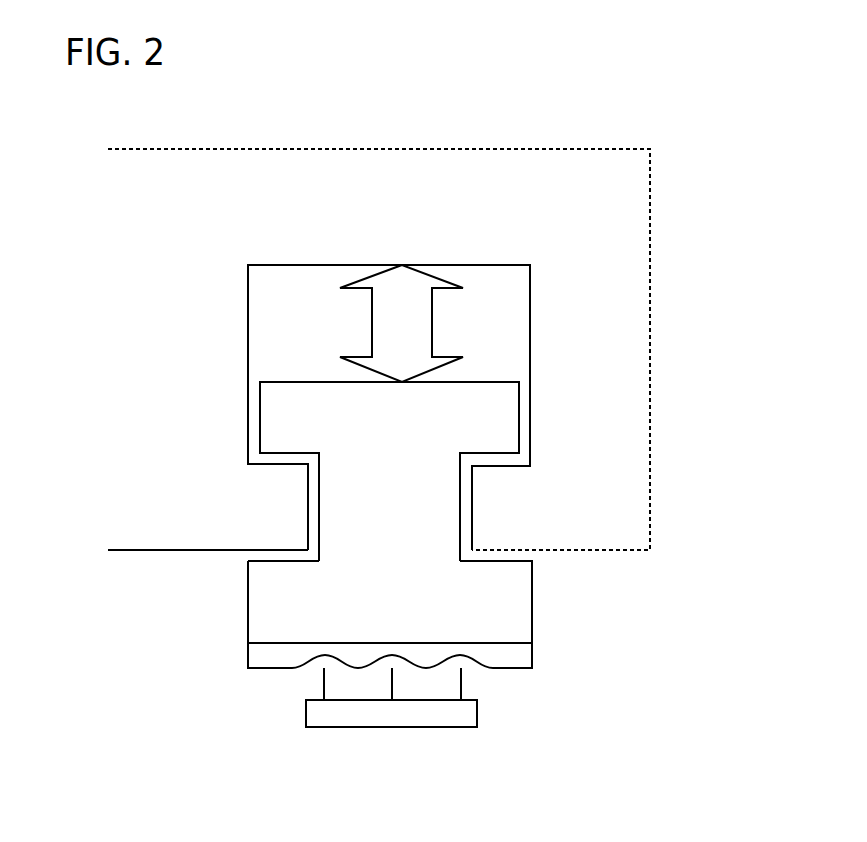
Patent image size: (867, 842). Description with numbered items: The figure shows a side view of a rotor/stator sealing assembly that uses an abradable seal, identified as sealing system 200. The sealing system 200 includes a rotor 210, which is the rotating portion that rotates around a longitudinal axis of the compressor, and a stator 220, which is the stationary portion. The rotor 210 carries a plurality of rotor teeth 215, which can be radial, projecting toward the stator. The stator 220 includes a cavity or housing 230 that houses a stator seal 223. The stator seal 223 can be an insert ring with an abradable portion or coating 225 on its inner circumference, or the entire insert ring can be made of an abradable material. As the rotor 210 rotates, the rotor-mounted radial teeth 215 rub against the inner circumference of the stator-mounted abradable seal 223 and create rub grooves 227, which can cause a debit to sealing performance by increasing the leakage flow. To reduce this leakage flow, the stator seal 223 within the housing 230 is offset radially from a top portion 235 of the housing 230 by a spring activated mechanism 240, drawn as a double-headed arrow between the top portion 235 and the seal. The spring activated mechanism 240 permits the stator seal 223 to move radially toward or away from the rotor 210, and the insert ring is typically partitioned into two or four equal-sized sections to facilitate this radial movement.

The sealing system 200 is at (253, 816).
The rotor 210 is at (477, 712).
The rotor teeth 215 is at (322, 686).
The stator 220 is at (650, 377).
The stator seal 223 is at (532, 590).
The abradable portion or coating 225 is at (532, 655).
The rub grooves 227 is at (292, 668).
The cavity or housing 230 is at (248, 423).
The top portion of the housing 235 is at (307, 265).
The spring activated mechanism 240 is at (433, 320).